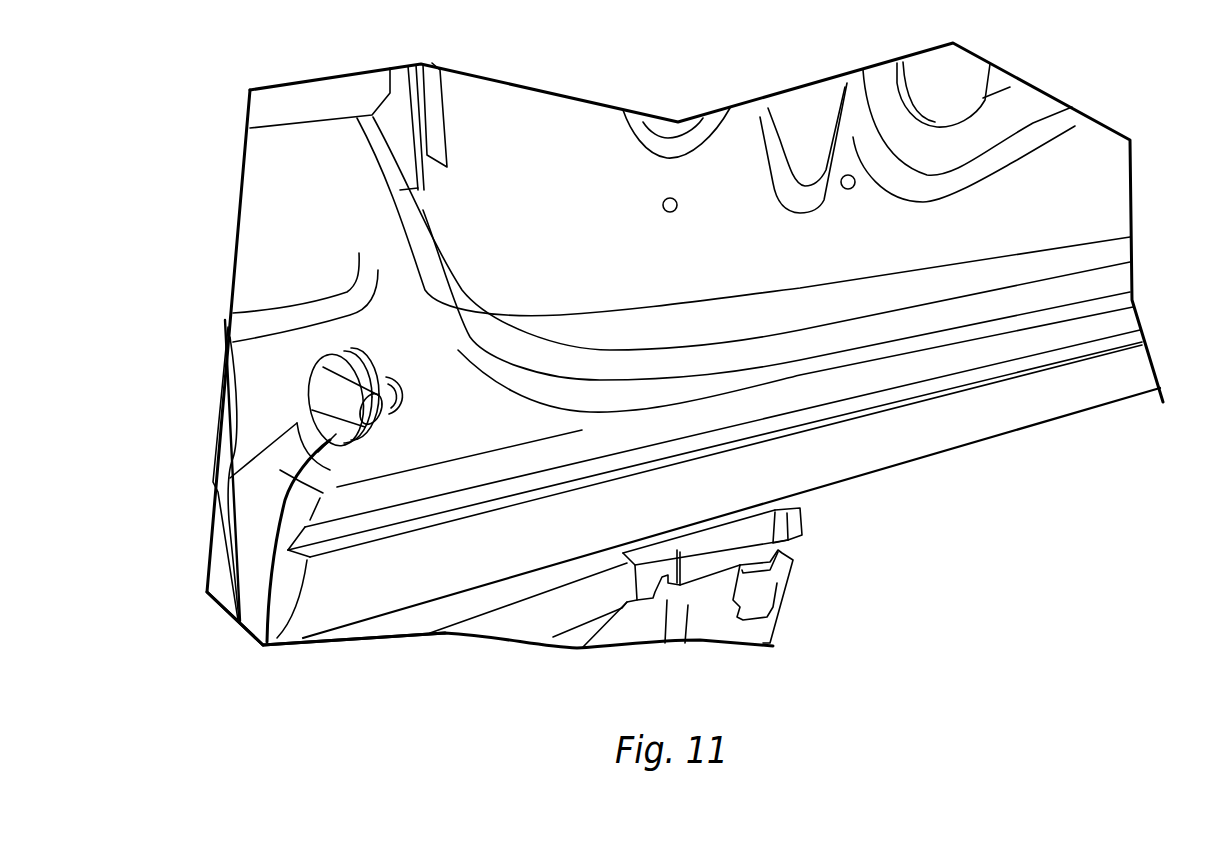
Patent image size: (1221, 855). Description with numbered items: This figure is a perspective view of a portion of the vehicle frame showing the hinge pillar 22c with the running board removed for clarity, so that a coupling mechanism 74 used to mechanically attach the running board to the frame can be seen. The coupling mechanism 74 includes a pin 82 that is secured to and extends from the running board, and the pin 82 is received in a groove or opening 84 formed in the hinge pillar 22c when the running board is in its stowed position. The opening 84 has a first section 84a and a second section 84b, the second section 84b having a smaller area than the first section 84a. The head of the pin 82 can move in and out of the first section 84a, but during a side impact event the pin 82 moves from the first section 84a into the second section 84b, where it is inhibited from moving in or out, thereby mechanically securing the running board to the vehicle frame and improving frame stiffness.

The hinge pillar 22c is at (297, 251).
The coupling mechanism 74 is at (267, 640).
The pin 82 is at (343, 397).
The opening 84 is at (357, 446).
The first section 84a is at (330, 363).
The second section 84b is at (392, 377).